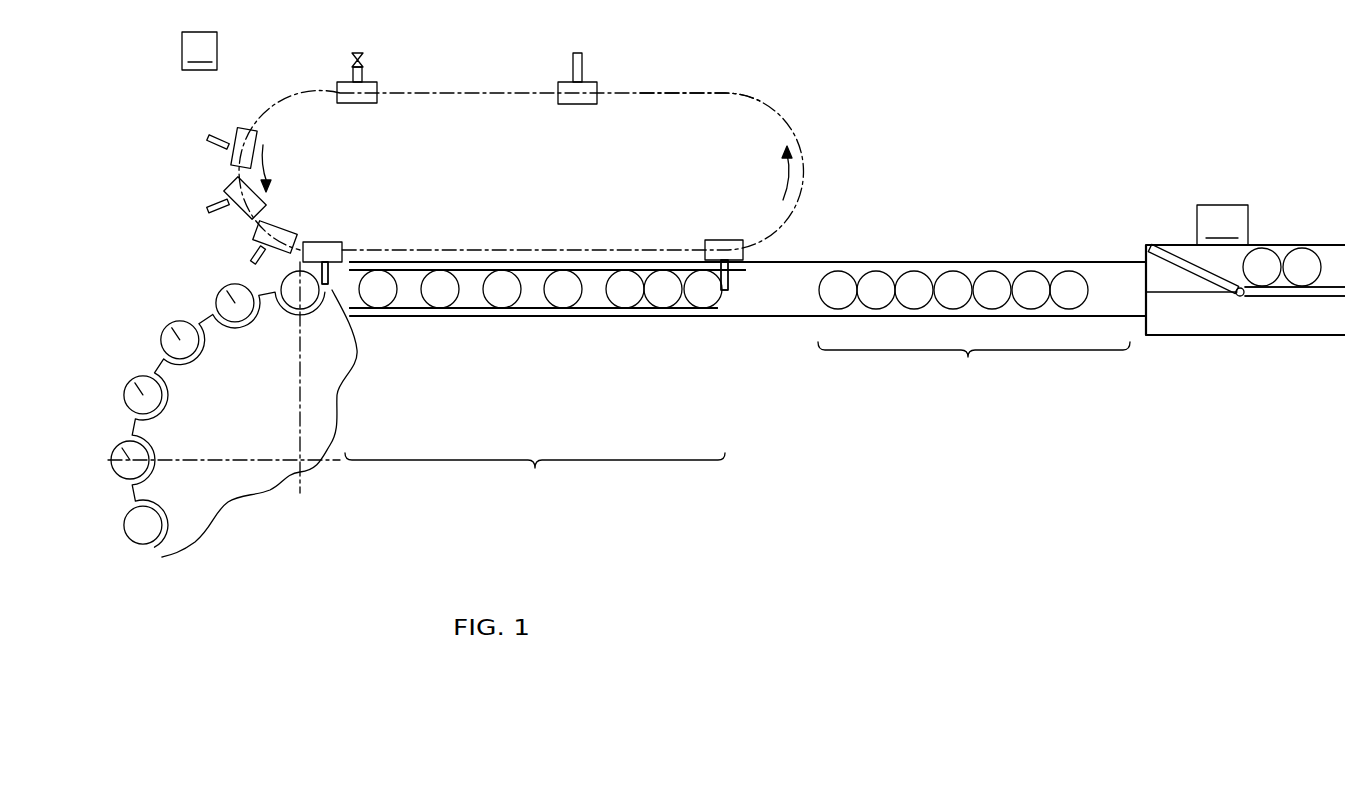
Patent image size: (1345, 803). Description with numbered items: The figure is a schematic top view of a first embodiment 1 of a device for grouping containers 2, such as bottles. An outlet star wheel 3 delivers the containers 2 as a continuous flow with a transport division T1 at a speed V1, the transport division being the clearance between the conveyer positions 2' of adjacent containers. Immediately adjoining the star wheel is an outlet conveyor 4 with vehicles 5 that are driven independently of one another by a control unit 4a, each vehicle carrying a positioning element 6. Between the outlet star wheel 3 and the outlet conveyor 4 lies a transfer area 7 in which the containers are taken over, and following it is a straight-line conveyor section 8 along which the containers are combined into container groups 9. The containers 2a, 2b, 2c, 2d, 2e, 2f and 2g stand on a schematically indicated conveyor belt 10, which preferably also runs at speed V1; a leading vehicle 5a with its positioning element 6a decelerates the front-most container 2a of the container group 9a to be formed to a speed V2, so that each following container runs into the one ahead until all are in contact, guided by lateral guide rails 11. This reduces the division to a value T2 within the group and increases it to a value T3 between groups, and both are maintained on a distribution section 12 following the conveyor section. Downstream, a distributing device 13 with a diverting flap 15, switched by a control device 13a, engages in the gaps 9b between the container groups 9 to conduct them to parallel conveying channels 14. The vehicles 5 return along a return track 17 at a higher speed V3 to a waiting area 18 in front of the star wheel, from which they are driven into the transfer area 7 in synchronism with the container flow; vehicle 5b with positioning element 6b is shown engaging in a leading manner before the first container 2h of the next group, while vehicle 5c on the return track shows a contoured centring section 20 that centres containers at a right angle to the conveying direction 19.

The first embodiment of the device 1 is at (915, 52).
The containers 2 is at (716, 373).
The conveyer positions 2' is at (501, 311).
The front-most container 2a is at (712, 300).
The container 2b is at (672, 300).
The container 2c is at (634, 300).
The container 2d is at (572, 300).
The container 2e is at (511, 300).
The container 2f is at (449, 300).
The container 2g is at (387, 300).
The first container of a subsequent container group 2h is at (309, 301).
The outlet star wheel 3 is at (320, 433).
The outlet conveyor 4 is at (458, 80).
The control unit 4a is at (199, 51).
The vehicles 5 is at (590, 82).
The leading vehicle 5a is at (705, 240).
The vehicle 5b is at (320, 242).
The vehicle 5c is at (357, 104).
The positioning elements 6 is at (365, 56).
The positioning element 6a is at (727, 291).
The positioning element 6b is at (330, 288).
The transfer area 7 is at (498, 318).
The conveyor section 8 is at (568, 330).
The container groups 9 is at (974, 362).
The container group to be formed 9a is at (535, 475).
The gaps 9b is at (807, 246).
The conveyor belt 10 is at (793, 303).
The lateral guide rails 11 is at (527, 262).
The distribution section 12 is at (928, 214).
The distributing device 13 is at (1160, 230).
The control device 13a is at (1222, 225).
The conveying channels 14 is at (1277, 247).
The diverting flap 15 is at (1193, 276).
The return track 17 is at (667, 92).
The waiting area 18 is at (198, 192).
The conveying direction 19 is at (929, 248).
The contoured centring sections 20 is at (348, 60).
The transport division T1 is at (213, 268).
The transport division T2 is at (663, 308).
The transport division T3 is at (838, 391).
The speed V1 is at (464, 333).
The speed V2 is at (746, 228).
The speed V3 is at (605, 122).